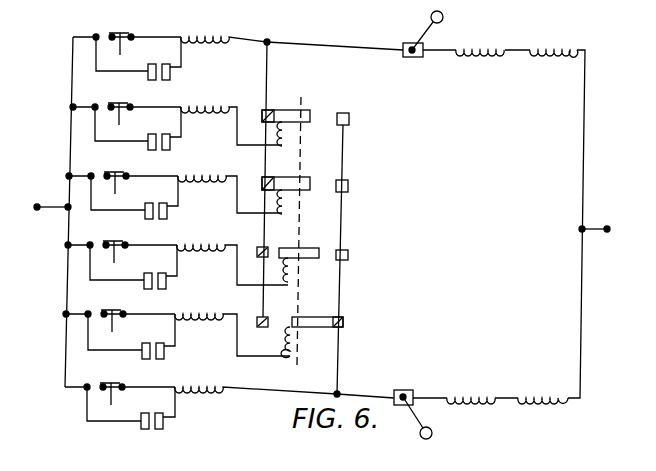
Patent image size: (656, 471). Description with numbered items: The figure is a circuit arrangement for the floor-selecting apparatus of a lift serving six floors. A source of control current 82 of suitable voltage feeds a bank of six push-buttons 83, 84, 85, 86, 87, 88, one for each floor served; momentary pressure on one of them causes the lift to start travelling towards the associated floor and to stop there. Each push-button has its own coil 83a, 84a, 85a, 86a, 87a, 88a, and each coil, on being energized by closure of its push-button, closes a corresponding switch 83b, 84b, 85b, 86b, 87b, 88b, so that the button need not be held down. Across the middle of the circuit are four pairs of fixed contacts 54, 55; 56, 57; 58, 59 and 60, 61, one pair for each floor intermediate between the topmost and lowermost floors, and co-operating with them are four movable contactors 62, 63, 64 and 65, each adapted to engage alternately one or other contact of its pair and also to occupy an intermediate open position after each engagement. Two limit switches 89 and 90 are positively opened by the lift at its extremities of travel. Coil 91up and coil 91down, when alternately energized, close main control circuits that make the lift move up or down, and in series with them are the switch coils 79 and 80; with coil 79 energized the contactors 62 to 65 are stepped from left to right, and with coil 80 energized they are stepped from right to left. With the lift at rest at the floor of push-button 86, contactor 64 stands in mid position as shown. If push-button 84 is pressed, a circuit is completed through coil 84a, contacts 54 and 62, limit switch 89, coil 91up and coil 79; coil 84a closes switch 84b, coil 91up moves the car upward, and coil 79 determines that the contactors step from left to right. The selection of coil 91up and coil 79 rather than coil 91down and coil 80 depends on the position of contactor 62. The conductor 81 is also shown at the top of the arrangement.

The fixed contact 54 is at (271, 112).
The fixed contact 55 is at (349, 119).
The fixed contact 56 is at (280, 175).
The fixed contact 57 is at (348, 186).
The fixed contact 58 is at (268, 249).
The fixed contact 59 is at (348, 256).
The fixed contact 60 is at (268, 320).
The fixed contact 61 is at (342, 329).
The movable contactor 62 is at (307, 116).
The movable contactor 63 is at (316, 174).
The movable contactor 64 is at (314, 242).
The movable contactor 65 is at (312, 312).
The switch coil 79 is at (556, 57).
The switch coil 80 is at (538, 396).
The conductor 81 is at (306, 8).
The source of control current 82 is at (325, 205).
The push-button 83 is at (127, 31).
The coil 83a is at (224, 27).
The switch 83b is at (170, 66).
The push-button 84 is at (117, 102).
The coil 84a is at (231, 113).
The switch 84b is at (170, 136).
The push-button 85 is at (114, 171).
The coil 85a is at (230, 182).
The switch 85b is at (167, 205).
The push-button 86 is at (113, 240).
The coil 86a is at (232, 252).
The switch 86b is at (166, 275).
The push-button 87 is at (111, 309).
The coil 87a is at (232, 323).
The switch 87b is at (164, 345).
The push-button 88 is at (110, 382).
The coil 88a is at (284, 380).
The switch 88b is at (160, 429).
The limit switch 89 is at (418, 58).
The limit switch 90 is at (410, 387).
The coil 91up is at (492, 57).
The coil 91down is at (478, 386).